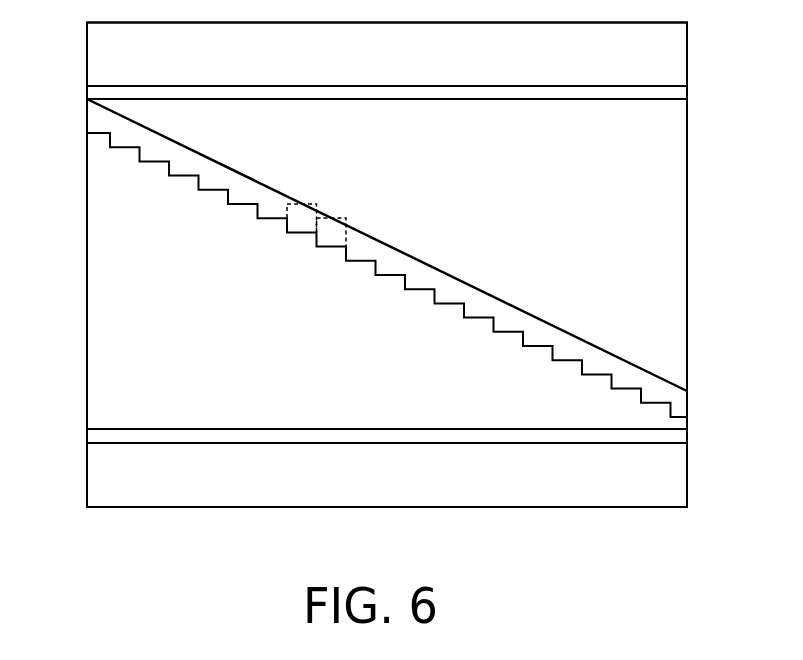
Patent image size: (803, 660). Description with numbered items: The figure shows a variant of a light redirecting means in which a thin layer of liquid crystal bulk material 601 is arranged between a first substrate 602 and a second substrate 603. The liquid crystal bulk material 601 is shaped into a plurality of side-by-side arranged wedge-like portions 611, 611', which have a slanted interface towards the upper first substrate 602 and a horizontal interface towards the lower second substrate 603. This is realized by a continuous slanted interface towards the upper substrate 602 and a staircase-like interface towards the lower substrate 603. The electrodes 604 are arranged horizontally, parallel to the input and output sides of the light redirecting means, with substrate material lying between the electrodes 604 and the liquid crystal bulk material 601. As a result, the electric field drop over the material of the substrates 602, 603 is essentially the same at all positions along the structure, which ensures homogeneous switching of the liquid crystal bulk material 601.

The liquid crystal bulk material 601 is at (213, 181).
The first substrate 602 is at (680, 43).
The second substrate 603 is at (98, 372).
The electrodes 604 is at (677, 93).
The wedge-like portion 611 is at (297, 191).
The wedge-like portion 611' is at (345, 209).